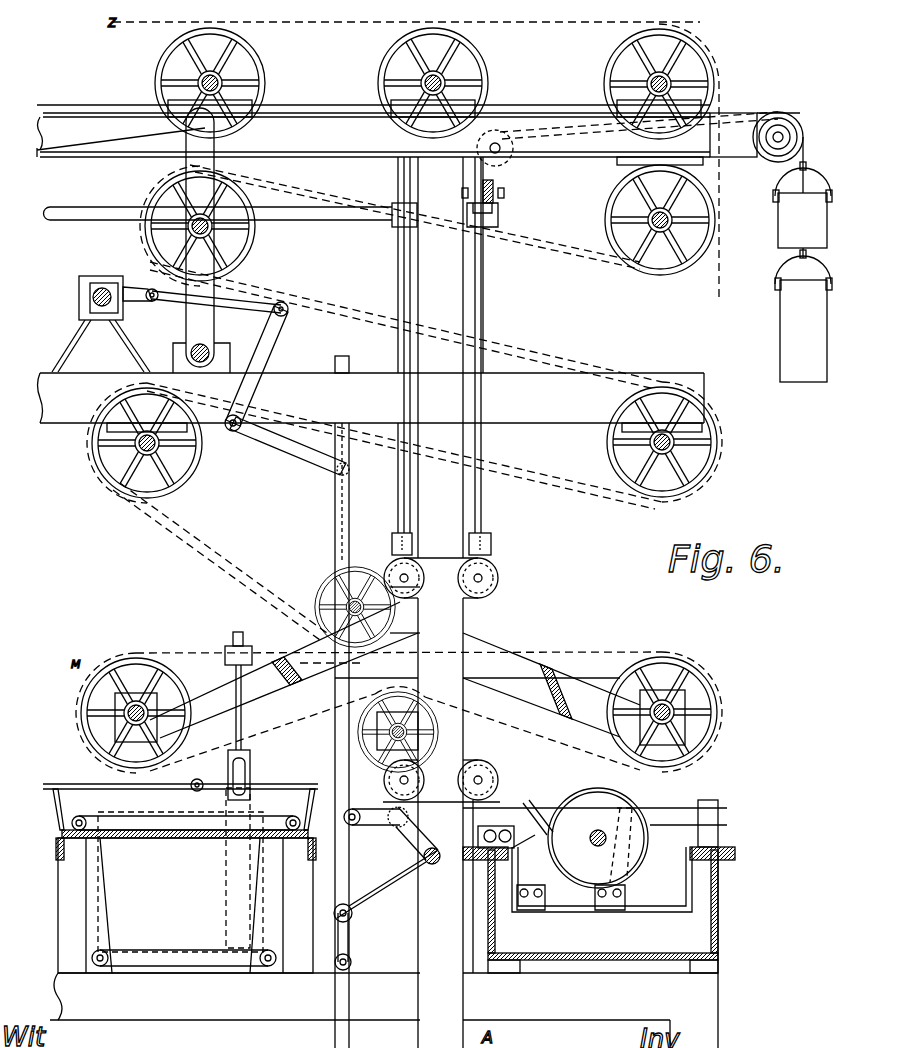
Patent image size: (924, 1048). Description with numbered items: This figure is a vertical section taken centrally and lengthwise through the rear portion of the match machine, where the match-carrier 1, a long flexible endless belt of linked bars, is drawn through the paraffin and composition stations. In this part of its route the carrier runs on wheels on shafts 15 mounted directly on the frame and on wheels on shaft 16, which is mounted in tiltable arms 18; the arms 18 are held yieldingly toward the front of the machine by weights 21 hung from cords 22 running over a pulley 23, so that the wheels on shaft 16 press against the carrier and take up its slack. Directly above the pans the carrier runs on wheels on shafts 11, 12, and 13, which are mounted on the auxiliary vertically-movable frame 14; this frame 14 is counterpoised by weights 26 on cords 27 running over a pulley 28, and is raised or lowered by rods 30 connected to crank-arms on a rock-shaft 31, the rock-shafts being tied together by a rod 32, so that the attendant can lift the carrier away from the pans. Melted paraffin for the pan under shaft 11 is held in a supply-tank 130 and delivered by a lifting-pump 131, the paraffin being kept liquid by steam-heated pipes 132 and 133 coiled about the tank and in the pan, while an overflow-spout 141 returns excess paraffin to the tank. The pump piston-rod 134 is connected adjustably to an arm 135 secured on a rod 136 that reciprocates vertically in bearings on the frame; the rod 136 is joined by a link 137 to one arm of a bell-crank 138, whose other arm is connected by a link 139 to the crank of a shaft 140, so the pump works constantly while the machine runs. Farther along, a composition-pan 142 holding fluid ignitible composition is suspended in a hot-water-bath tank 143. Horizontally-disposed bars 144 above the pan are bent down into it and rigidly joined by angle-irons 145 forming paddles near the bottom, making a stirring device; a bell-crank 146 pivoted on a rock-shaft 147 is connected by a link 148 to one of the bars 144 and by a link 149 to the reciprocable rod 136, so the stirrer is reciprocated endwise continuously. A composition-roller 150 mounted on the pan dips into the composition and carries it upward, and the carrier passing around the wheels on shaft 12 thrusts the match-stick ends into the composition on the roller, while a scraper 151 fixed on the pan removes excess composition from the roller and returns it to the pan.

The match-carrier 1 is at (520, 348).
The shaft 11 is at (126, 718).
The shaft 12 is at (674, 708).
The shaft 13 is at (326, 598).
The auxiliary vertically-movable frame 14 is at (395, 670).
The shafts 15 is at (218, 80).
The shaft 16 is at (192, 232).
The tiltable arms 18 is at (201, 240).
The weights 21 is at (802, 192).
The cords 22 is at (760, 115).
The pulley 23 is at (754, 138).
The weights 26 is at (803, 315).
The cords 27 is at (483, 288).
The pulley 28 is at (514, 159).
The rods 30 is at (403, 290).
The rock-shaft 31 is at (336, 226).
The rod 32 is at (493, 185).
The supply-tank 130 is at (180, 878).
The lifting-pump 131 is at (251, 771).
The steam-heated pipes 132 is at (263, 950).
The steam-heated pipes 133 is at (285, 816).
The pump piston-rod 134 is at (228, 638).
The arm 135 is at (270, 648).
The rod 136 is at (346, 455).
The link 137 is at (346, 520).
The bell-crank 138 is at (280, 448).
The link 139 is at (250, 302).
The shaft 140 is at (98, 300).
The overflow-spout 141 is at (209, 774).
The composition-pan 142 is at (602, 879).
The hot-water-bath tank 143 is at (599, 910).
The horizontally-disposed bars 144 is at (595, 823).
The angle-irons 145 is at (598, 905).
The bell-crank 146 is at (386, 886).
The rock-shaft 147 is at (434, 866).
The link 148 is at (375, 828).
The link 149 is at (346, 940).
The composition-roller 150 is at (594, 788).
The scraper 151 is at (526, 803).